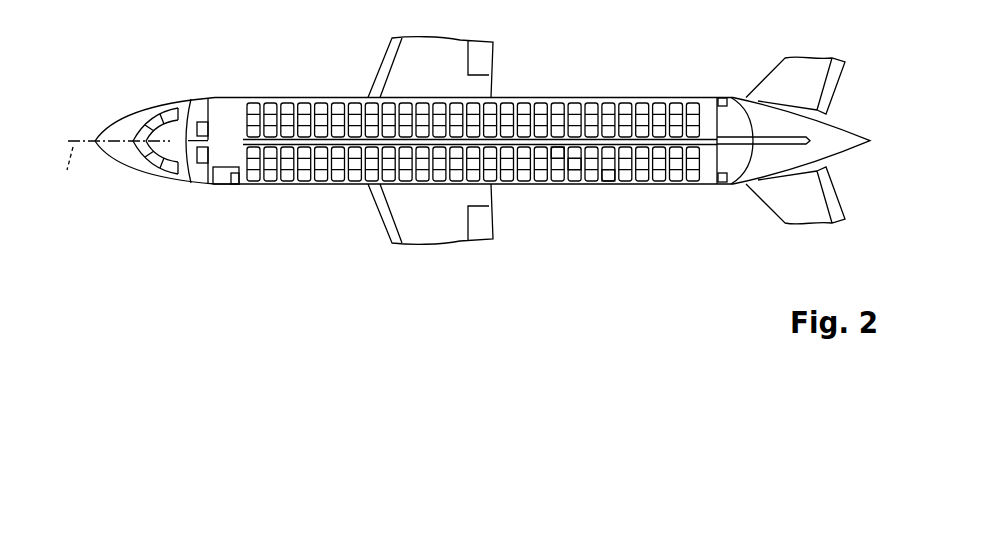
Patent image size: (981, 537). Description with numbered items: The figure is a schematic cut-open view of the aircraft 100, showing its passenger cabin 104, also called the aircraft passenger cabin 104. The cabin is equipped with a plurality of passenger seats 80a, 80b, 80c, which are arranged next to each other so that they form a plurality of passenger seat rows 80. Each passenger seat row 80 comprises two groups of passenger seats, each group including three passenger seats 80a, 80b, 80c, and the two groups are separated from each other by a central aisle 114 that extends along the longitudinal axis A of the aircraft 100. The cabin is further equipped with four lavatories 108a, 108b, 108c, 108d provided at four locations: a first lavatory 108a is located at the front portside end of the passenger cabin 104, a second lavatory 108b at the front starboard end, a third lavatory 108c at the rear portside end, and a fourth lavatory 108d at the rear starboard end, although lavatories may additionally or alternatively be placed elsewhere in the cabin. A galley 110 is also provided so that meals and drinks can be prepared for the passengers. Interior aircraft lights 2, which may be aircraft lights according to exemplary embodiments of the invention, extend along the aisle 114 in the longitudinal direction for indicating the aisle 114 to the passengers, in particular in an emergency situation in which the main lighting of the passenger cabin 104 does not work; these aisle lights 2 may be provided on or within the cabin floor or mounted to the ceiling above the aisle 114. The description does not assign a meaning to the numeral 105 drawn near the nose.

The aircraft 100 is at (124, 79).
The interior aircraft lights 2 is at (235, 172).
The passenger seat rows 80 is at (613, 97).
The passenger seat 80a is at (610, 175).
The passenger seat 80b is at (580, 164).
The passenger seat 80c is at (552, 152).
The aircraft passenger cabin 104 is at (558, 84).
The cockpit 105 is at (124, 193).
The first lavatory 108a is at (196, 178).
The second lavatory 108b is at (193, 108).
The third lavatory 108c is at (735, 185).
The fourth lavatory 108d is at (733, 97).
The galley 110 is at (223, 185).
The central aisle 114 is at (700, 134).